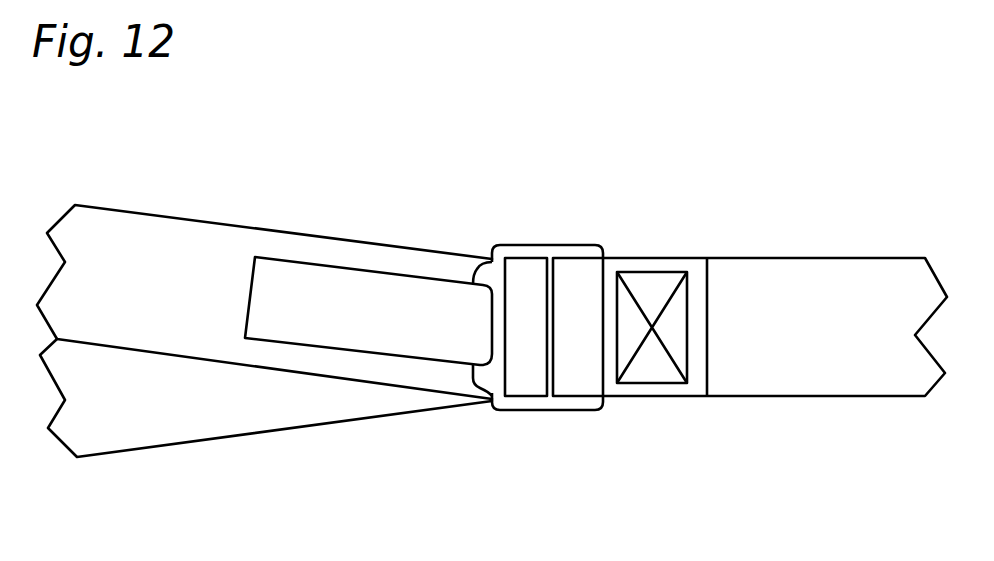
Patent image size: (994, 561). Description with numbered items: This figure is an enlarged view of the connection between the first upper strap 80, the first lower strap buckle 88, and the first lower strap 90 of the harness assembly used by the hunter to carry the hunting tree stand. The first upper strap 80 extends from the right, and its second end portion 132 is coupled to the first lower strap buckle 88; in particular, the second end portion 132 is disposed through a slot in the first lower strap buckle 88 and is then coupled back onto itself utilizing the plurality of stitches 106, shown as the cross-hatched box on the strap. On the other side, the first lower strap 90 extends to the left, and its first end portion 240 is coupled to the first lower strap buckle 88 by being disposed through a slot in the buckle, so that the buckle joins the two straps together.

The first upper strap 80 is at (825, 397).
The first lower strap buckle 88 is at (548, 412).
The first lower strap 90 is at (148, 448).
The plurality of stitches 106 is at (652, 270).
The second end portion 132 is at (805, 275).
The first end portion 240 is at (290, 358).